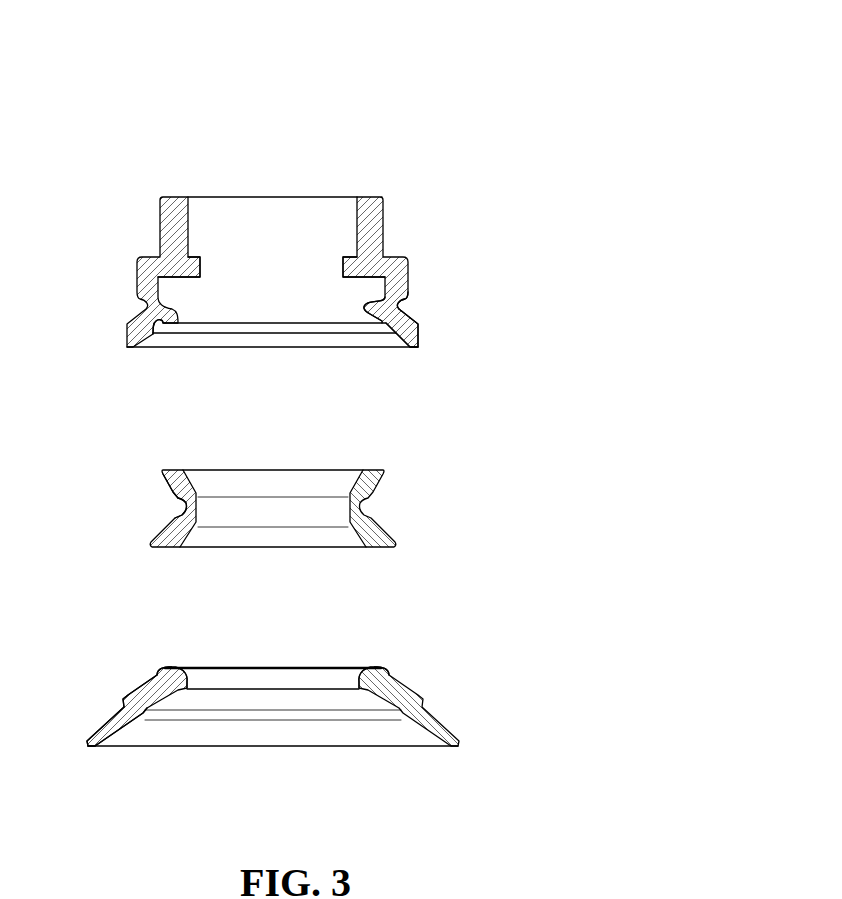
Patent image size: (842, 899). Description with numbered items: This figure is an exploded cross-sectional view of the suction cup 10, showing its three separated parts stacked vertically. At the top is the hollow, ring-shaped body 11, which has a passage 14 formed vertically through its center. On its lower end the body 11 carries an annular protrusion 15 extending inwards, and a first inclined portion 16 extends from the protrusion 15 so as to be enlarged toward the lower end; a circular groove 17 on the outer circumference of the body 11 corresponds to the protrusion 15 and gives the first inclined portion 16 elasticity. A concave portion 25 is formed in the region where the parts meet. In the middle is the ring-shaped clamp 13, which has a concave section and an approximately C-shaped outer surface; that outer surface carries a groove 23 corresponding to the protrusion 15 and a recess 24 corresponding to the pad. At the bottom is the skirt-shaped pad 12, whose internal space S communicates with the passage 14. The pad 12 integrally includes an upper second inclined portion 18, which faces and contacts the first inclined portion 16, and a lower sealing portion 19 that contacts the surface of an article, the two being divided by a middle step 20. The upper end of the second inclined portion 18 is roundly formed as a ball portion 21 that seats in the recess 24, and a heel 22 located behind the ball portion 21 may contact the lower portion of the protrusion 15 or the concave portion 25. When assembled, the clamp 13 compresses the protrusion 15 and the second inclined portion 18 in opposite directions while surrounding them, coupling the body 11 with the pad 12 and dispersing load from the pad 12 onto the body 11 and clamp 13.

The suction cup 10 is at (346, 102).
The body 11 is at (400, 214).
The pad 12 is at (449, 689).
The clamp 13 is at (415, 467).
The passage 14 is at (280, 293).
The protrusion 15 is at (363, 307).
The first inclined portion 16 is at (398, 345).
The groove 17 is at (403, 308).
The second inclined portion 18 is at (137, 688).
The sealing portion 19 is at (100, 726).
The step 20 is at (145, 710).
The ball portion 21 is at (357, 683).
The heel 22 is at (392, 677).
The groove 23 is at (166, 490).
The recess 24 is at (184, 512).
The concave portion 25 is at (163, 326).
The internal space S is at (282, 715).